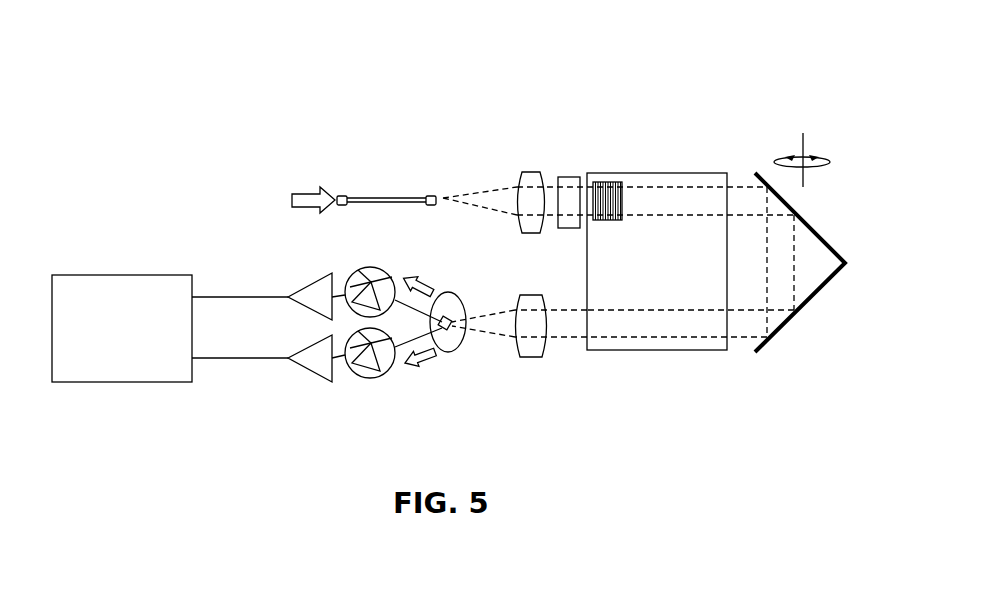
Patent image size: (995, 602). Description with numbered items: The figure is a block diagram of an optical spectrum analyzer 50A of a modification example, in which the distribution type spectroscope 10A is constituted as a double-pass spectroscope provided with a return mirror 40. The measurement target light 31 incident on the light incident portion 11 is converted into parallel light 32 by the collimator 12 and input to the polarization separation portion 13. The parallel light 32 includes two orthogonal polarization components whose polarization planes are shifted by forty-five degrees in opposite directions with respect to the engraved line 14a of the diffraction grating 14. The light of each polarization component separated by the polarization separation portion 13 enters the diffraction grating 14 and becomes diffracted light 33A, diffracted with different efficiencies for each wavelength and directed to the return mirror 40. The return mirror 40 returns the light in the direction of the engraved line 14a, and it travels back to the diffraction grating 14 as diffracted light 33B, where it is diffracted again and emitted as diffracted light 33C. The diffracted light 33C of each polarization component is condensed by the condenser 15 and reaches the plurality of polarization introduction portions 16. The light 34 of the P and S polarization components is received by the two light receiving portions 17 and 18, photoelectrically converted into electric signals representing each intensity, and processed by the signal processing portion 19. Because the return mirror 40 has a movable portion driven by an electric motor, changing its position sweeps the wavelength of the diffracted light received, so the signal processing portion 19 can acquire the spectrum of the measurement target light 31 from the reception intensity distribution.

The distribution type spectroscope 10A is at (553, 83).
The light incident portion 11 is at (342, 195).
The collimator 12 is at (528, 172).
The polarization separation portion 13 is at (570, 175).
The diffraction grating 14 is at (698, 180).
The engraved line 14a is at (625, 200).
The condenser 15 is at (532, 357).
The polarization introduction portions 16 is at (457, 353).
The light receiving portion 17 is at (355, 377).
The light receiving portion 18 is at (347, 270).
The signal processing portion 19 is at (150, 273).
The measurement target light 31 is at (303, 190).
The parallel light 32 is at (550, 187).
The diffracted light 33A is at (742, 197).
The diffracted light 33B is at (745, 330).
The diffracted light 33C is at (572, 330).
The polarization component light 34 is at (503, 328).
The return mirror 40 is at (810, 303).
The optical spectrum analyzer 50A is at (177, 417).